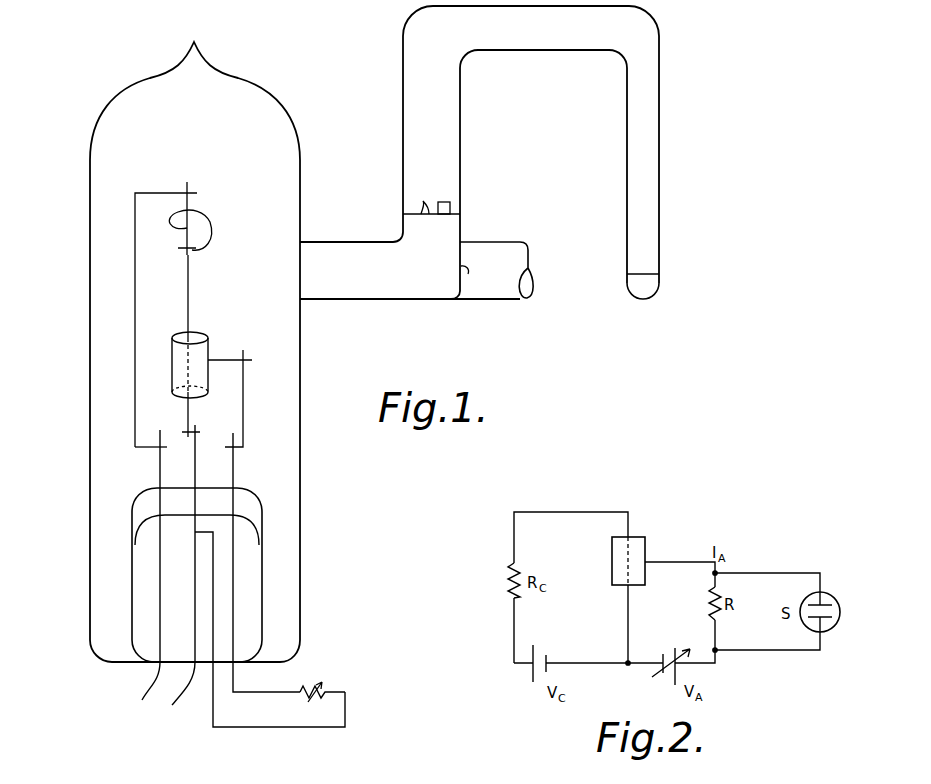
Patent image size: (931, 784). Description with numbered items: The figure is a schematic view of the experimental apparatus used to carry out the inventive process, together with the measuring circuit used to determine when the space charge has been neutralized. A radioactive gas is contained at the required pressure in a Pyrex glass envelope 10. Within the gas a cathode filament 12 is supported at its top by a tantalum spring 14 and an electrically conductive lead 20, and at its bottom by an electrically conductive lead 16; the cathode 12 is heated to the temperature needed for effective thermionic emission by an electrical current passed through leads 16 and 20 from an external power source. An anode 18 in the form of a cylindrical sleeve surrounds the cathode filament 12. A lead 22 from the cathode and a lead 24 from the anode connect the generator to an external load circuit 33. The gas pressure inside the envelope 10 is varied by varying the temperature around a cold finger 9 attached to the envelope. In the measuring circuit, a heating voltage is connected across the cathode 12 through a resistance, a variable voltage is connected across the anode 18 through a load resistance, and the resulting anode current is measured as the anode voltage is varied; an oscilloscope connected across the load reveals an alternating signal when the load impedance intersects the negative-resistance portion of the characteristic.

In FIG. 1, the cold finger 9 is at (653, 206).
In FIG. 1, the Pyrex glass envelope 10 is at (100, 127).
In FIG. 1, the cathode filament 12 is at (186, 407).
In FIG. 2, the cathode filament 12 is at (627, 612).
In FIG. 1, the tantalum spring 14 is at (212, 224).
In FIG. 1, the electrically conductive lead 16 is at (183, 690).
In FIG. 1, the anode 18 is at (205, 354).
In FIG. 2, the anode 18 is at (640, 549).
In FIG. 1, the electrically conductive lead 20 is at (153, 680).
In FIG. 1, the lead from the cathode 22 is at (239, 728).
In FIG. 1, the lead from the anode 24 is at (238, 680).
In FIG. 1, the external load circuit 33 is at (321, 690).